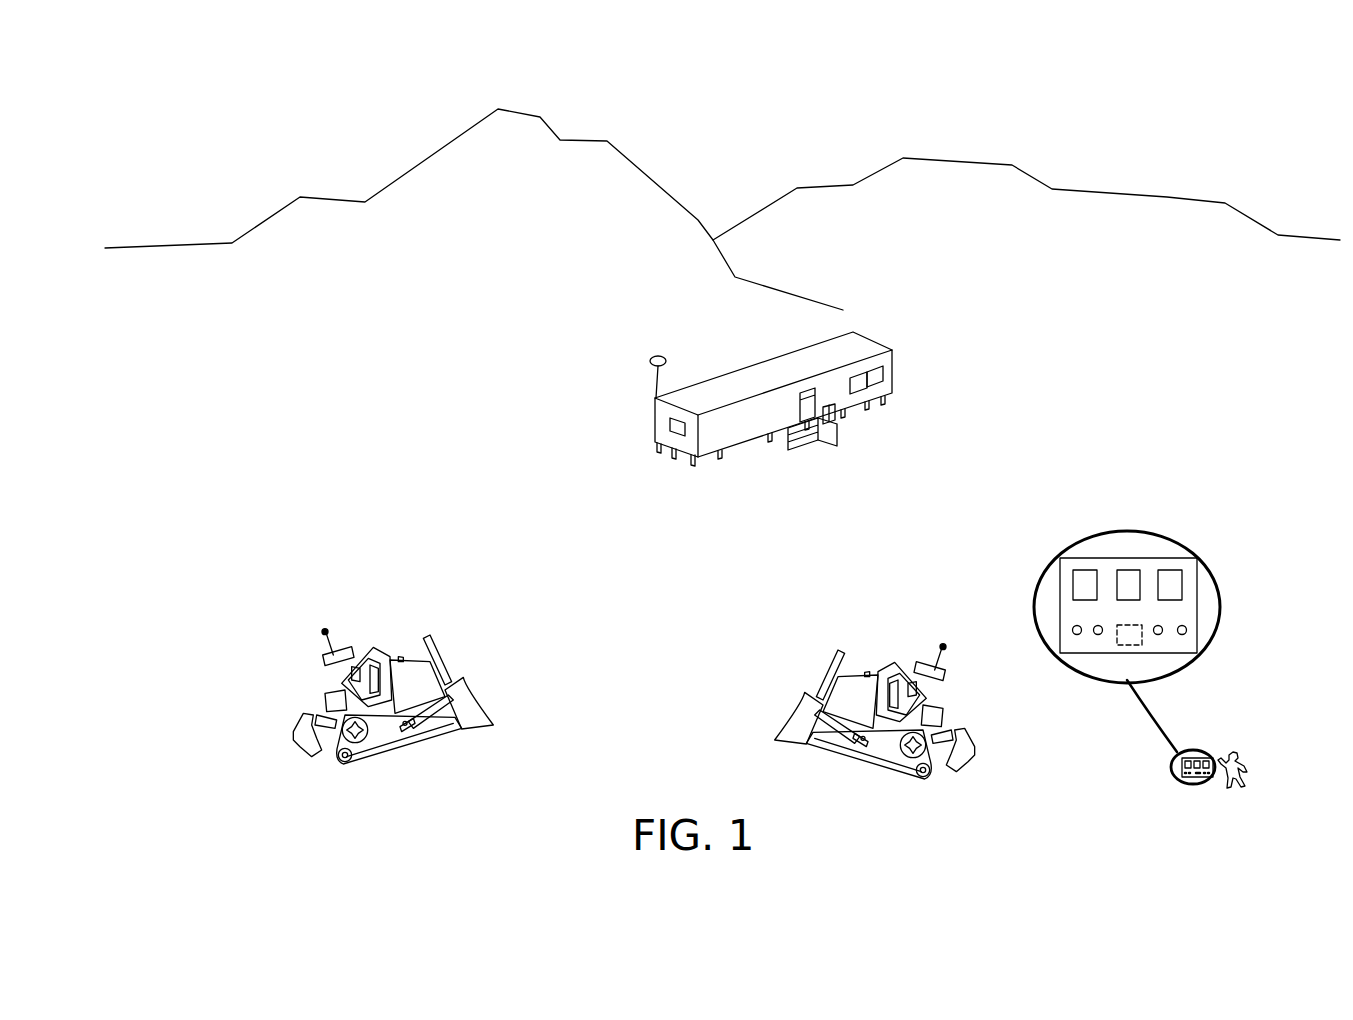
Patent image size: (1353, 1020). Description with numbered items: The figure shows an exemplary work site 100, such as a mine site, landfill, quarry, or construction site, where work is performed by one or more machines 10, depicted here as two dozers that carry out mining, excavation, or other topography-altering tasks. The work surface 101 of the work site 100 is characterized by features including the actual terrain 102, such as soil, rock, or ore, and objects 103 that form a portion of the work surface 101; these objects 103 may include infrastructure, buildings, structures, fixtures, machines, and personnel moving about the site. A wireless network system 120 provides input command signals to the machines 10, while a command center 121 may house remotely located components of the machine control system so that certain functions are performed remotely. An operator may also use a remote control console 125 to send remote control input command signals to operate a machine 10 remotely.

The work site 100 is at (212, 188).
The work surface 101 is at (261, 576).
The terrain 102 is at (1146, 320).
The objects 103 is at (750, 377).
The machine 10 is at (375, 622).
The wireless network system 120 is at (650, 357).
The command center 121 is at (871, 345).
The remote control console 125 is at (1193, 602).